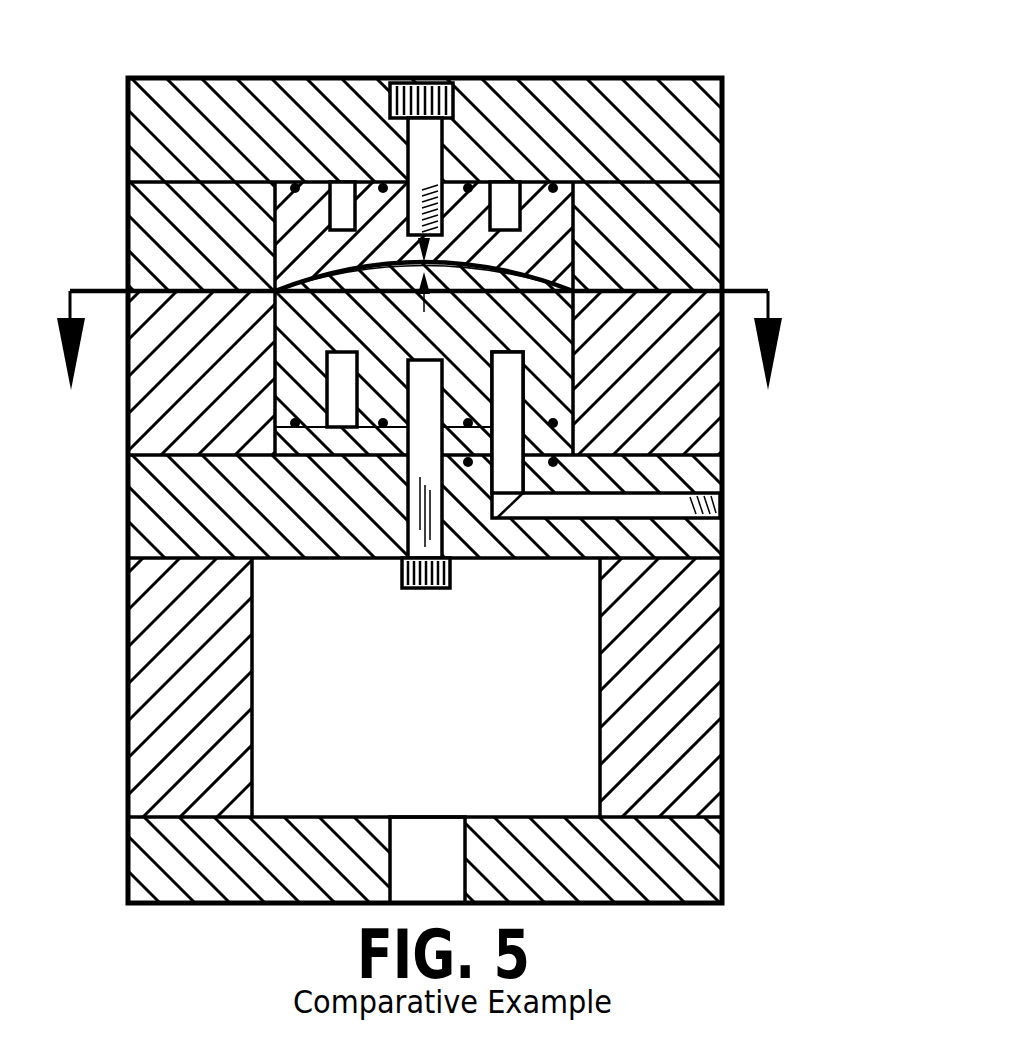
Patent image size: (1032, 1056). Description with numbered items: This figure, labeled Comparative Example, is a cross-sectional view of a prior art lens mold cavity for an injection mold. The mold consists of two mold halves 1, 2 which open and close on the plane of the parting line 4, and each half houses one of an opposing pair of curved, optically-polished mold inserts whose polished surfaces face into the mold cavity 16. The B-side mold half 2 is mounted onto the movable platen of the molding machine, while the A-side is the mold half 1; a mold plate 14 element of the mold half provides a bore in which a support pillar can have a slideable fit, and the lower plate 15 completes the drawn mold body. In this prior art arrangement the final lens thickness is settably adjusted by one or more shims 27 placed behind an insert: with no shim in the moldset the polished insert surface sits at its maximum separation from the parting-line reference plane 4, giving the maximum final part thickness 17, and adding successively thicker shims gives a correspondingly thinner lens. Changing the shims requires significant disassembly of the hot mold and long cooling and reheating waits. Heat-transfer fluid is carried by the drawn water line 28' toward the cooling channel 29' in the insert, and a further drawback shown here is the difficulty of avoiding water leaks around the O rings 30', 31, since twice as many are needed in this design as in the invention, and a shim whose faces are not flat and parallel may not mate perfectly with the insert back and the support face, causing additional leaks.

The A-side mold half 1 is at (826, 218).
The B-side mold half 2 is at (834, 373).
The parting line 4 is at (535, 25).
The mold plate 14 is at (663, 325).
The lower plate 15 is at (680, 540).
The mold cavity 16 is at (325, 283).
The final part thickness 17 is at (332, 290).
The shim 27 is at (333, 440).
The L-shaped electrode member 28' is at (654, 471).
The vertical electrode portion 29' is at (654, 422).
The O ring 30' is at (172, 466).
The O ring 31 is at (555, 462).